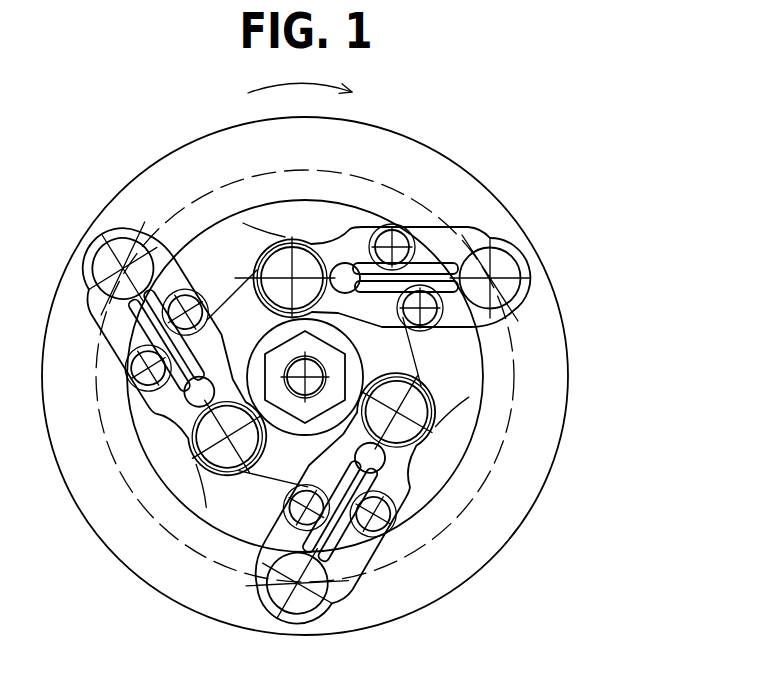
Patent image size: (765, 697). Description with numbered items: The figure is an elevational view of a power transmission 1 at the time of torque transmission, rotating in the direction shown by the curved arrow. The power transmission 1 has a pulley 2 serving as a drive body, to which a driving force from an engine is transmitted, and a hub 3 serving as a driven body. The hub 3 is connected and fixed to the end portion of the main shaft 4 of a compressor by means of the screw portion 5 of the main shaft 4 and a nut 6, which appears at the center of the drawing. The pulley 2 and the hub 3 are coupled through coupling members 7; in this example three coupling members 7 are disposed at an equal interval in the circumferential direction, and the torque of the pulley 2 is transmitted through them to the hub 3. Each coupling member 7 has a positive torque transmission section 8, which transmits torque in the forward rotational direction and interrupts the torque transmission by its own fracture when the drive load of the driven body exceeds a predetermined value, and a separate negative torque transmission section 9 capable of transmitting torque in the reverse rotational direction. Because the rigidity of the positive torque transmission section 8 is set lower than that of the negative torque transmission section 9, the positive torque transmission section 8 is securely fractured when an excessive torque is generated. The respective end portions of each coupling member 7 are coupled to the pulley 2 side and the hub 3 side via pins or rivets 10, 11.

The power transmission 1 is at (462, 139).
The pulley 2 is at (475, 200).
The hub 3 is at (410, 355).
The main shaft 4 is at (290, 395).
The screw portion 5 is at (326, 364).
The nut 6 is at (288, 352).
The coupling member 7 is at (378, 554).
The positive torque transmission section 8 is at (338, 548).
The negative torque transmission section 9 is at (360, 558).
The pin or rivet 10 is at (507, 290).
The pin or rivet 11 is at (290, 276).